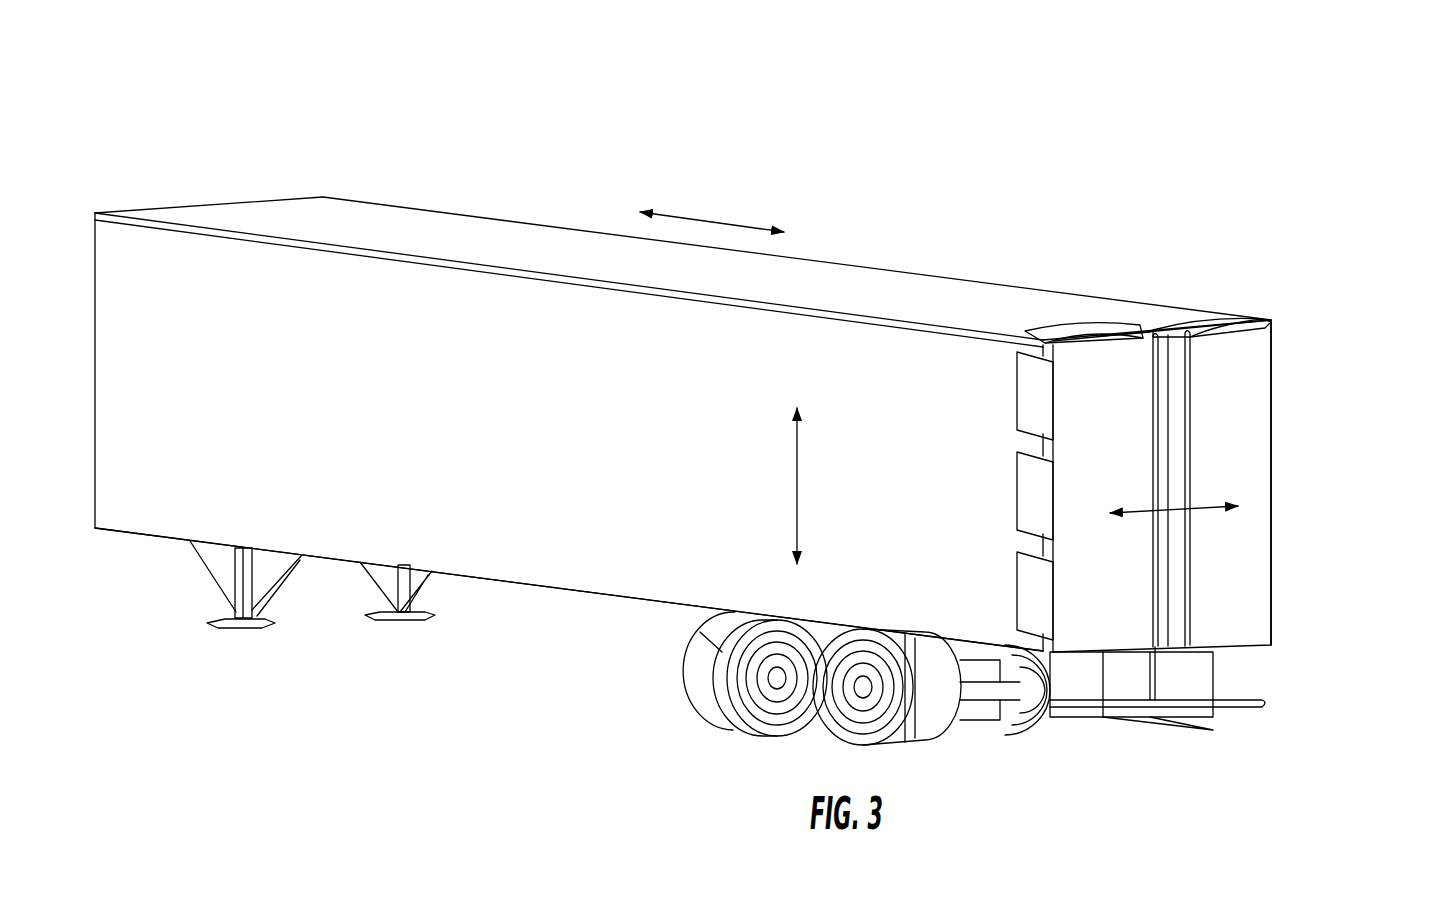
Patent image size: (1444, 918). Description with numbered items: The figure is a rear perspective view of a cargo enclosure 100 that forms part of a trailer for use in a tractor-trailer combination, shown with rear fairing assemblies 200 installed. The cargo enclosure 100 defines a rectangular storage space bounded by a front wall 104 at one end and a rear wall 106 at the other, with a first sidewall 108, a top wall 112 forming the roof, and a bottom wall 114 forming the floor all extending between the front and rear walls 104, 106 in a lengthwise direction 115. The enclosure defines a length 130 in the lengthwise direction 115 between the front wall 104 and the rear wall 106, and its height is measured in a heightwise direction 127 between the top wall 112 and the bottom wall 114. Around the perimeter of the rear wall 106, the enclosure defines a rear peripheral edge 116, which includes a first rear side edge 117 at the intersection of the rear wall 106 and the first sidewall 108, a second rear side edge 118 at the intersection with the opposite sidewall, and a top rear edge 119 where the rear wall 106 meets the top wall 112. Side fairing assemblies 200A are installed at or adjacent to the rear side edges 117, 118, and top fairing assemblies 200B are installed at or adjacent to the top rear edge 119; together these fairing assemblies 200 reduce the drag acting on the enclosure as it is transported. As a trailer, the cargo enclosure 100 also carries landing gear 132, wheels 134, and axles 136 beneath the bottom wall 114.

The cargo enclosure 100 is at (732, 443).
The front wall 104 is at (95, 294).
The rear wall 106 is at (1252, 527).
The first sidewall 108 is at (511, 555).
The top wall 112 is at (863, 282).
The bottom wall 114 is at (580, 592).
The lengthwise direction 115 is at (718, 222).
The rear peripheral edge 116 is at (1144, 442).
The first rear side edge 117 is at (1050, 545).
The second rear side edge 118 is at (1272, 425).
The top rear edge 119 is at (1130, 333).
The heightwise direction 127 is at (795, 490).
The length 130 is at (1145, 505).
The landing gear 132 is at (255, 622).
The wheels 134 is at (762, 732).
The axles 136 is at (983, 690).
The fairing assemblies 200 is at (1150, 435).
The side fairing assemblies 200A is at (1026, 400).
The top fairing assemblies 200B is at (1076, 330).